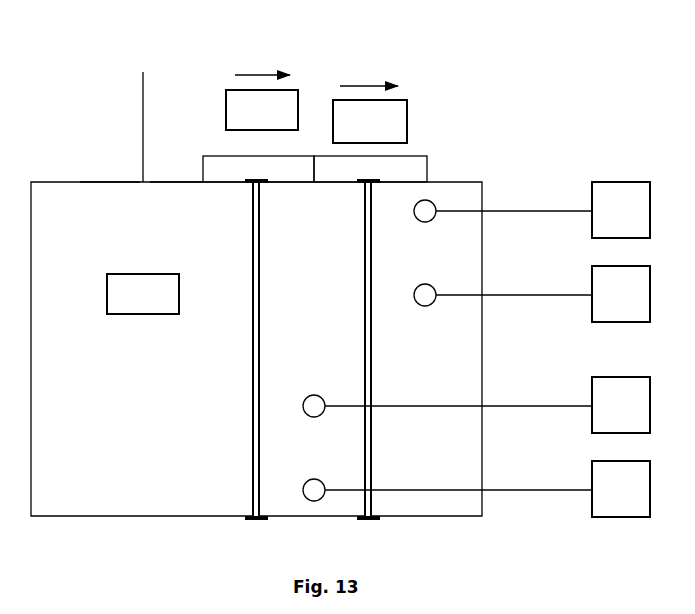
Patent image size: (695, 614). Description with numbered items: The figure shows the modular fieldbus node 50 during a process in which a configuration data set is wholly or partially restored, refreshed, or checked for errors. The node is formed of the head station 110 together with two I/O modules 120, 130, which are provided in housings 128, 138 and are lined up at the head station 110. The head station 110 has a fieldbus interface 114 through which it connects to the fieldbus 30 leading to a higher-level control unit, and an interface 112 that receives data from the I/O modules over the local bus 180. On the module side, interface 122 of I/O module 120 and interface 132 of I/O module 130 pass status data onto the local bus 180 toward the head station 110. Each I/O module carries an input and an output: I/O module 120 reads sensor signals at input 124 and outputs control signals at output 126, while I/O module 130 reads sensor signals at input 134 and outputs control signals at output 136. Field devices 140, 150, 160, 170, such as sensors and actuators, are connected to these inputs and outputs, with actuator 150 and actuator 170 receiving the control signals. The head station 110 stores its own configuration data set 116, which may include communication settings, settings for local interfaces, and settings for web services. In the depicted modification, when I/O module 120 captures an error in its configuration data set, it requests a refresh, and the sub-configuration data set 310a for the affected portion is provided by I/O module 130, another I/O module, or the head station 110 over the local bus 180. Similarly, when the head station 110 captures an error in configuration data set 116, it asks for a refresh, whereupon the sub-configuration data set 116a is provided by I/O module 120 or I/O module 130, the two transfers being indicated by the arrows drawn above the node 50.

The modular fieldbus node 50 is at (592, 42).
The fieldbus 30 is at (160, 70).
The local bus 180 is at (315, 70).
The sub-configuration data set 116a is at (285, 121).
The sub-configuration data set 310a is at (394, 132).
The interface 112 is at (197, 180).
The fieldbus interface 114 is at (135, 180).
The interface 122 is at (307, 180).
The interface 132 is at (432, 177).
The head station 110 is at (159, 217).
The I/O module 120 is at (327, 217).
The I/O module 130 is at (442, 362).
The configuration data set 116 is at (161, 304).
The input 134 is at (410, 223).
The output 136 is at (410, 306).
The input 124 is at (300, 390).
The output 126 is at (300, 475).
The housing 128 is at (285, 518).
The housing 138 is at (455, 516).
The field device 140 is at (638, 220).
The actuator 150 is at (638, 304).
The field device 160 is at (638, 415).
The actuator 170 is at (638, 499).